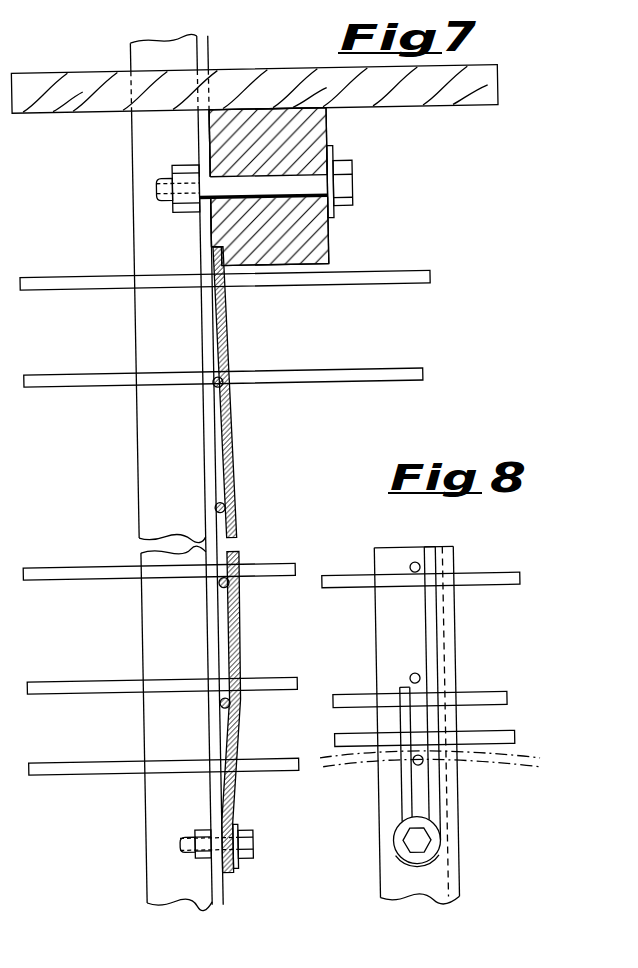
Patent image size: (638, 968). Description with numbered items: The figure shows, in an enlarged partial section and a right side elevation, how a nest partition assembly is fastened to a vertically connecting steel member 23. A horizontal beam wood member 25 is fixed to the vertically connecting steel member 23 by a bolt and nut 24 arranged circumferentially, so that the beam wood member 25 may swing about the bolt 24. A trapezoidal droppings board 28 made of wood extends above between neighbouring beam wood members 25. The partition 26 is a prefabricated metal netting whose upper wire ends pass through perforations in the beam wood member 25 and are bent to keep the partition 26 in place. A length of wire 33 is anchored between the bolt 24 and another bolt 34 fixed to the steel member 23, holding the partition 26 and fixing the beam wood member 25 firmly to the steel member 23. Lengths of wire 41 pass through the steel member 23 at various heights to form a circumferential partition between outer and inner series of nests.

In FIG. 7, the vertically connecting steel member 23 is at (164, 437).
In FIG. 8, the vertically connecting steel member 23 is at (449, 632).
In FIG. 7, the bolt and nut 24 is at (349, 191).
In FIG. 7, the horizontal beam wood member 25 is at (314, 142).
In FIG. 7, the partition 26 is at (230, 510).
In FIG. 8, the partition 26 is at (472, 579).
In FIG. 7, the trapezoidal droppings board 28 is at (292, 88).
In FIG. 7, the length of wire 33 is at (231, 432).
In FIG. 8, the length of wire 33 is at (431, 668).
In FIG. 7, the bolt 34 is at (241, 846).
In FIG. 8, the bolt 34 is at (425, 833).
In FIG. 7, the length of wire 41 is at (381, 281).
In FIG. 8, the length of wire 41 is at (415, 562).